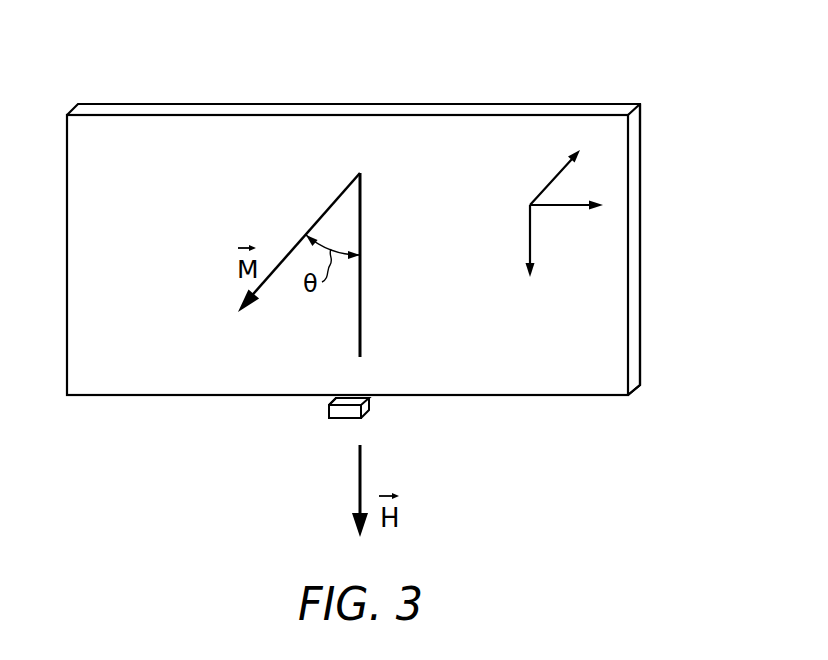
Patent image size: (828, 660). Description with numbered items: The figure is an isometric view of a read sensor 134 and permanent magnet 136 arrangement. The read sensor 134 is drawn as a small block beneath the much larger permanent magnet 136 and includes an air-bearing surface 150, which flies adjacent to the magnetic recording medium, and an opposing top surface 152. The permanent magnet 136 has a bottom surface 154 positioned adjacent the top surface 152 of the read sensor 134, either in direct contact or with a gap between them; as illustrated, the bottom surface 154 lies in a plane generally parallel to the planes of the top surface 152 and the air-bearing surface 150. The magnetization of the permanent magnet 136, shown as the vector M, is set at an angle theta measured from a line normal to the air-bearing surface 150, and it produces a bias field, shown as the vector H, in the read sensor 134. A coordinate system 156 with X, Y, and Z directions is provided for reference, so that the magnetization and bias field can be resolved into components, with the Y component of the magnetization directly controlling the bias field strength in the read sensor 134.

The permanent magnet 136 is at (546, 89).
The bottom surface 154 is at (630, 397).
The coordinate system 156 is at (548, 184).
The air-bearing surface 150 is at (367, 413).
The top surface 152 is at (330, 401).
The read sensor 134 is at (316, 418).